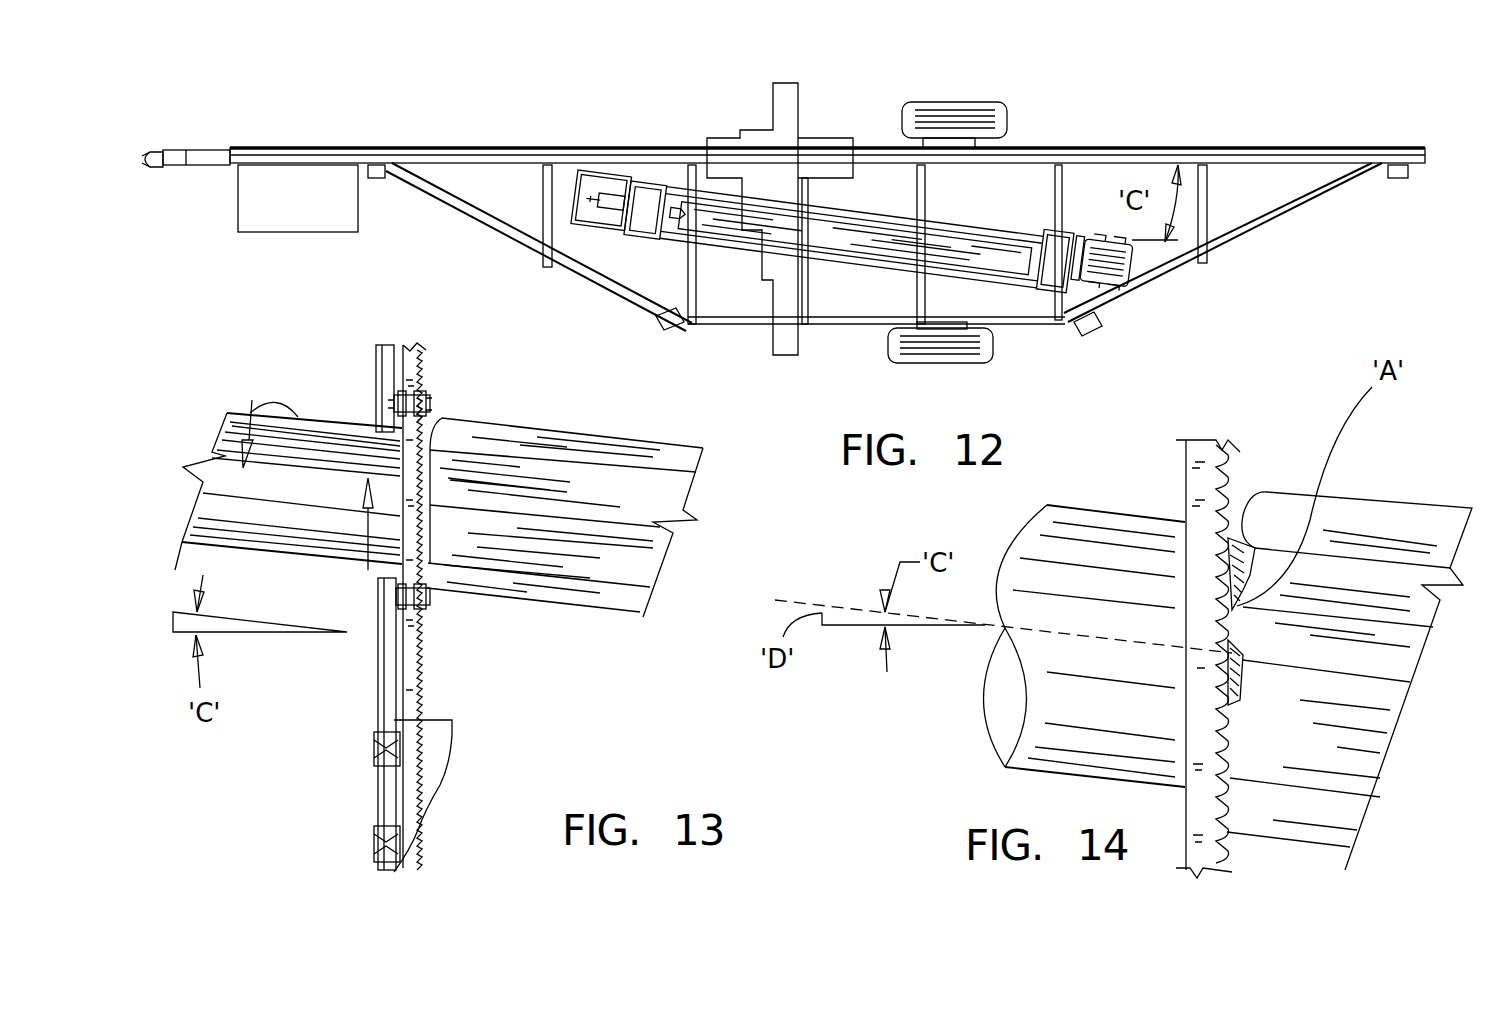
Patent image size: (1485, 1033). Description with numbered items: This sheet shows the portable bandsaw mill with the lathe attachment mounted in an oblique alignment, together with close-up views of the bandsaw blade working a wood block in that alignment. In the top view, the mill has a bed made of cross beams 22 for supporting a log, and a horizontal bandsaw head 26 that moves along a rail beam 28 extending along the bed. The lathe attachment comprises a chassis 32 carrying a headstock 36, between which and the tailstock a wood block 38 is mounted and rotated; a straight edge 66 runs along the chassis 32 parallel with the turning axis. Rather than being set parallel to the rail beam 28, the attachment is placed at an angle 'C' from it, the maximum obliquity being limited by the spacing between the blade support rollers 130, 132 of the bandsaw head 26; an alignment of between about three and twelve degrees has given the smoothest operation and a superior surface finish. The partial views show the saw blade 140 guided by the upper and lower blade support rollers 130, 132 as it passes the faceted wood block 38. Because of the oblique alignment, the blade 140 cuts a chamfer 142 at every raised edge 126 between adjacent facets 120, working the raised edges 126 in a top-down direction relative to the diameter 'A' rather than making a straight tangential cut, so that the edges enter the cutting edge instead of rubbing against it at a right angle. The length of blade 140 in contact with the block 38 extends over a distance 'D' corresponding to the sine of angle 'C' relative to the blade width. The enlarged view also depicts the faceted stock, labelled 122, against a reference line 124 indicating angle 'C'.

In FIG. 12, the cross beams 22 is at (700, 282).
In FIG. 12, the bandsaw head 26 is at (820, 140).
In FIG. 12, the rail beam 28 is at (1243, 148).
In FIG. 12, the chassis 32 is at (1010, 300).
In FIG. 12, the headstock 36 is at (656, 190).
In FIG. 12, the straight edge 66 is at (1020, 225).
In FIG. 13, the facets 120 is at (605, 448).
In FIG. 13, the log 122 is at (287, 408).
In FIG. 13, the reference plane 124 is at (367, 530).
In FIG. 13, the raised edge 126 is at (520, 453).
In FIG. 13, the blade support roller 130 is at (394, 420).
In FIG. 13, the blade support roller 132 is at (428, 592).
In FIG. 13, the saw blade 140 is at (400, 465).
In FIG. 14, the saw blade 140 is at (1186, 488).
In FIG. 13, the chamfer 142 is at (428, 420).
In FIG. 14, the chamfer 142 is at (1255, 540).
In FIG. 13, the wood block 38 is at (558, 604).
In FIG. 14, the wood block 38 is at (1397, 505).